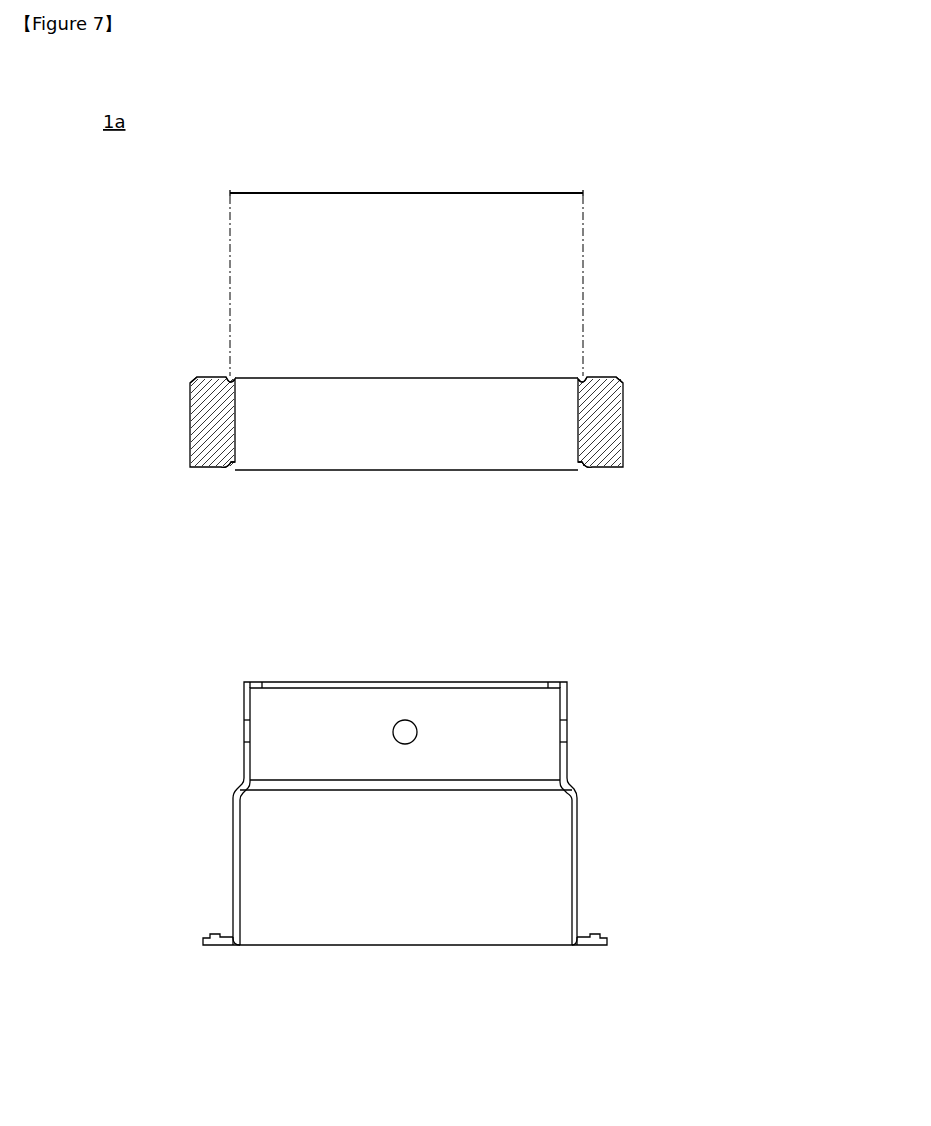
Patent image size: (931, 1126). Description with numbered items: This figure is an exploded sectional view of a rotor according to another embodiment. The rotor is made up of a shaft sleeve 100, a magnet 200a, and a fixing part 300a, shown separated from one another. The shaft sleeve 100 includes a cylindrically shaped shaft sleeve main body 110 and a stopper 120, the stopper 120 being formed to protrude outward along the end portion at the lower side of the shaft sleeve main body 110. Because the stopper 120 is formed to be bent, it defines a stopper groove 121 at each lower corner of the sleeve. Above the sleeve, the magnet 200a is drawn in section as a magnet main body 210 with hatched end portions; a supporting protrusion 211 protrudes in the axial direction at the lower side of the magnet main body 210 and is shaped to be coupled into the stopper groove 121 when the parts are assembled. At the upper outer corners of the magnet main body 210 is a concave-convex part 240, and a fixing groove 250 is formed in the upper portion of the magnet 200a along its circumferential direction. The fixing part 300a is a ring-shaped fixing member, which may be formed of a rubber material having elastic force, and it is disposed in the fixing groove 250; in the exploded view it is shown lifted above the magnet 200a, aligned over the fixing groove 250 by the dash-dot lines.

The shaft sleeve 100 is at (540, 967).
The shaft sleeve main body 110 is at (578, 830).
The stopper 120 is at (216, 945).
The stopper groove 121 is at (228, 937).
The magnet 200a is at (655, 418).
The magnet main body 210 is at (190, 422).
The supporting protrusion 211 is at (228, 468).
The concave-convex part 240 is at (192, 378).
The fixing groove 250 is at (228, 378).
The fixing part 300a is at (588, 192).